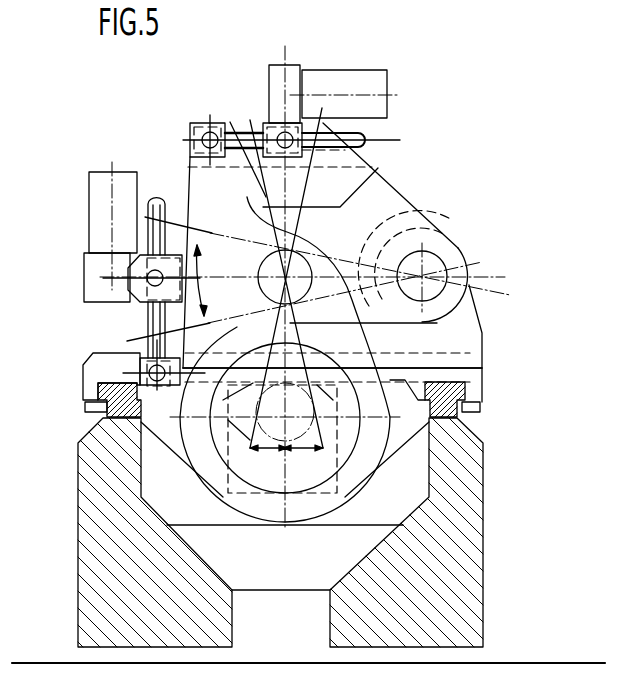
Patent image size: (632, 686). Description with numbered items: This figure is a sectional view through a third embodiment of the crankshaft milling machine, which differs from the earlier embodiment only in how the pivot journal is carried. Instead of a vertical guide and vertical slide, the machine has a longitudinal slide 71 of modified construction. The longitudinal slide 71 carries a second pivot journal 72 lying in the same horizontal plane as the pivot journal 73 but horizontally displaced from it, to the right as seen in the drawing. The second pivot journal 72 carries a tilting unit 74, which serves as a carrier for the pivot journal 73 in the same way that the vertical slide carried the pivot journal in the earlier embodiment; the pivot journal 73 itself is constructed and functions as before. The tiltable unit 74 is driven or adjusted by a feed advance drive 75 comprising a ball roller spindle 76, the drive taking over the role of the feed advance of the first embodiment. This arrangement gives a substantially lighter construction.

The longitudinal slide 71 is at (482, 356).
The second pivot journal 72 is at (439, 263).
The pivot journal 73 is at (258, 262).
The tilting unit 74 is at (362, 225).
The feed advance drive 75 is at (108, 193).
The ball roller spindle 76 is at (163, 202).